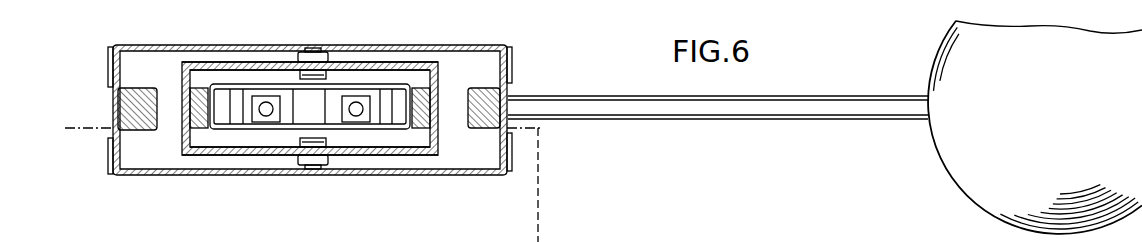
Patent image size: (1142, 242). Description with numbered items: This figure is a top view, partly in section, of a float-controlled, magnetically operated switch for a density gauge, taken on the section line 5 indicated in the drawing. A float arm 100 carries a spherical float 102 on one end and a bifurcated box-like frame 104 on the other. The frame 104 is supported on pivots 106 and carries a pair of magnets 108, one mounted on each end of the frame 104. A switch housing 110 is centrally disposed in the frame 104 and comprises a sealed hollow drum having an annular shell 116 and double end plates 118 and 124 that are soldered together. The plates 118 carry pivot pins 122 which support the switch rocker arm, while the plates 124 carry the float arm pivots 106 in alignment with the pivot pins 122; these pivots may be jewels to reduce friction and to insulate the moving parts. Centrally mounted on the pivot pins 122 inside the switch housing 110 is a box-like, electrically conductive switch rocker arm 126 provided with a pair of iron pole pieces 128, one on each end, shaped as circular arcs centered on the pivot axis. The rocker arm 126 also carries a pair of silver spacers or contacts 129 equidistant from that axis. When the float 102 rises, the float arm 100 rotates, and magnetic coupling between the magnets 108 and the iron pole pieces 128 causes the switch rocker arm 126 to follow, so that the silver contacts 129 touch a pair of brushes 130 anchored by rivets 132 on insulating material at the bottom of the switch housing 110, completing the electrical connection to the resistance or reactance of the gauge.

The section line 5 is at (80, 129).
The float arm 100 is at (805, 110).
The spherical float 102 is at (948, 150).
The bifurcated box-like frame 104 is at (455, 46).
The pivots 106 is at (322, 56).
The magnets 108 is at (121, 95).
The switch housing 110 is at (442, 135).
The annular shell 116 is at (440, 73).
The end plates 118 is at (206, 65).
The pivot pins 122 is at (297, 72).
The end plates 124 is at (221, 64).
The switch rocker arm 126 is at (356, 85).
The iron pole pieces 128 is at (432, 106).
The silver spacers or contacts 129 is at (238, 122).
The brushes 130 is at (268, 118).
The rivets 132 is at (264, 103).